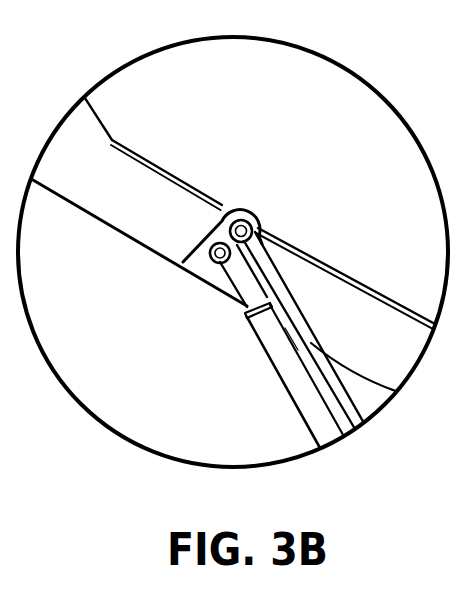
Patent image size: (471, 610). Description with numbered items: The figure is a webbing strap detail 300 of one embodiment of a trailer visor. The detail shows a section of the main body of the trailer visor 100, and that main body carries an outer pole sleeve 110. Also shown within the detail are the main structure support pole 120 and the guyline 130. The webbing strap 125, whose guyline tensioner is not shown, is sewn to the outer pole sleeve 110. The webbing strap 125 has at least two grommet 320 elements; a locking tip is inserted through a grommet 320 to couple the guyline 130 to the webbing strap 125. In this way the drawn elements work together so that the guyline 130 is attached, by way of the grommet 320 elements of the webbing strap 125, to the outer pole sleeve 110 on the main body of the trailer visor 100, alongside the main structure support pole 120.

The trailer visor 100 is at (137, 242).
The outer pole sleeve 110 is at (336, 97).
The main structure support pole 120 is at (270, 337).
The webbing strap 125 is at (253, 222).
The guyline 130 is at (340, 395).
The webbing strap detail 300 is at (126, 64).
The grommet 320 is at (199, 271).